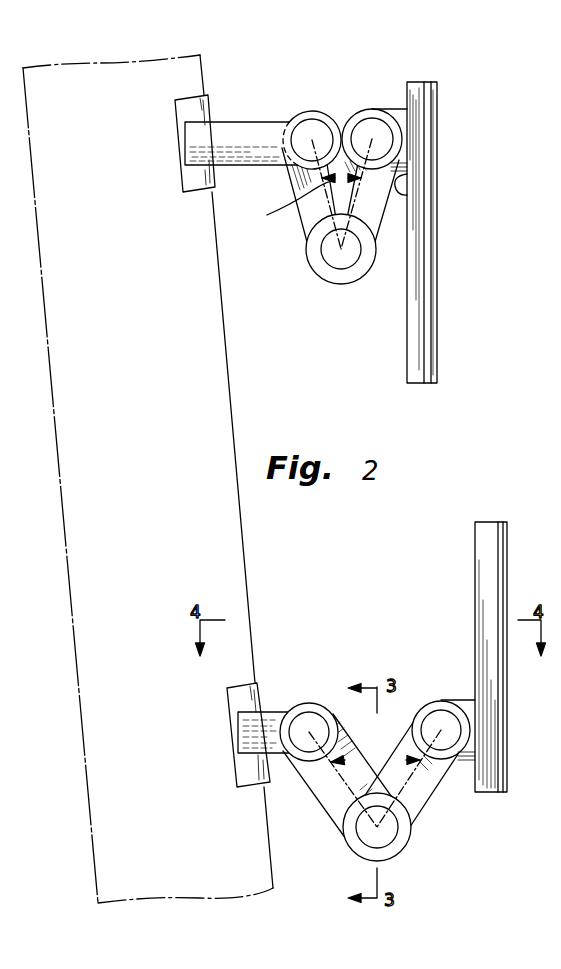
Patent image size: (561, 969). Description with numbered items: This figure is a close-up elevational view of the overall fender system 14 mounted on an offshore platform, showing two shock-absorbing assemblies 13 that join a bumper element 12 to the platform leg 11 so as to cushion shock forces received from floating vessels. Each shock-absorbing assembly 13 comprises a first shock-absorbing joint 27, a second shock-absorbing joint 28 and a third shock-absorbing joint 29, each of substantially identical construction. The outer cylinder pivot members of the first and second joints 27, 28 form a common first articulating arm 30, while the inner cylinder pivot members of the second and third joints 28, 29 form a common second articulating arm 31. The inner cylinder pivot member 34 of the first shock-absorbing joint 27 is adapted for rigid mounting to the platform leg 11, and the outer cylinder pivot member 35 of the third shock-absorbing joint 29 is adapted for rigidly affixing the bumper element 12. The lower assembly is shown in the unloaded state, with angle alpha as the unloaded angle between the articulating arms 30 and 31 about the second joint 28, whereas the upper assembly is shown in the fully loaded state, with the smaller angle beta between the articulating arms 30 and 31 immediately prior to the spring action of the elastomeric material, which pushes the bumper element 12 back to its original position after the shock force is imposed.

The platform leg 11 is at (243, 563).
The bumper element 12 is at (440, 224).
The shock-absorbing assembly 13 is at (334, 93).
The fender system 14 is at (452, 334).
The first shock-absorbing joint 27 is at (278, 100).
The second shock-absorbing joint 28 is at (331, 300).
The third shock-absorbing joint 29 is at (386, 96).
The first articulating arm 30 is at (295, 217).
The second articulating arm 31 is at (375, 223).
The inner cylinder pivot member 34 is at (240, 118).
The outer cylinder pivot member 35 is at (397, 193).